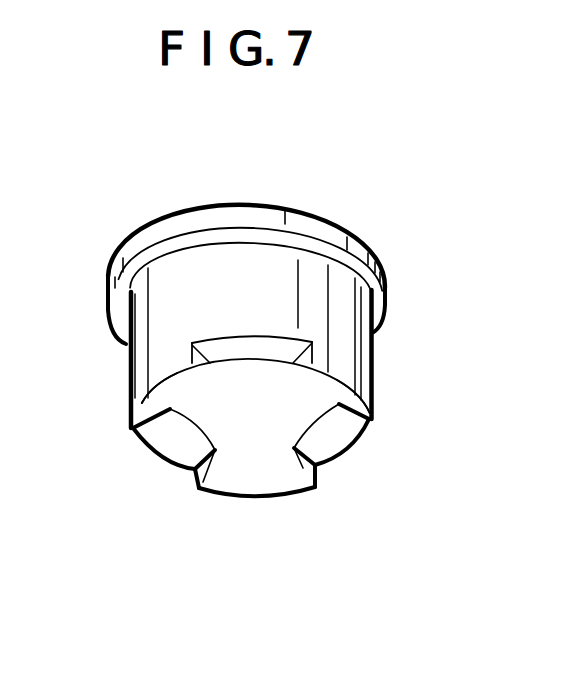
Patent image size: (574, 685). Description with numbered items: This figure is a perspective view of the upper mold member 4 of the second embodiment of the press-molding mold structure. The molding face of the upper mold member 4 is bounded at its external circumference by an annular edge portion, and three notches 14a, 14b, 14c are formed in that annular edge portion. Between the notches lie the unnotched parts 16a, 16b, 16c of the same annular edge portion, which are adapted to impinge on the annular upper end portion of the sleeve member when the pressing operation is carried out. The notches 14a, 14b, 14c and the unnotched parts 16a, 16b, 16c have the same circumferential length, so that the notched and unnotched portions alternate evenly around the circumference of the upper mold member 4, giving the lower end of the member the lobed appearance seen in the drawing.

The upper mold member 4 is at (280, 258).
The notch 14a is at (287, 354).
The notch 14b is at (323, 448).
The notch 14c is at (176, 443).
The unnotched part 16a is at (364, 400).
The unnotched part 16b is at (261, 477).
The unnotched part 16c is at (153, 405).